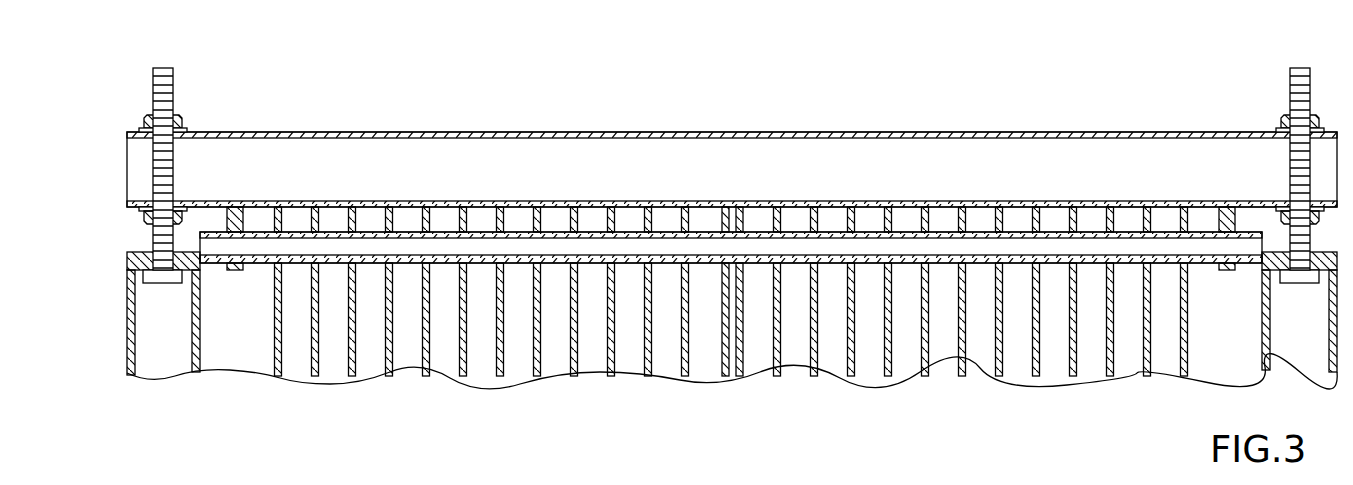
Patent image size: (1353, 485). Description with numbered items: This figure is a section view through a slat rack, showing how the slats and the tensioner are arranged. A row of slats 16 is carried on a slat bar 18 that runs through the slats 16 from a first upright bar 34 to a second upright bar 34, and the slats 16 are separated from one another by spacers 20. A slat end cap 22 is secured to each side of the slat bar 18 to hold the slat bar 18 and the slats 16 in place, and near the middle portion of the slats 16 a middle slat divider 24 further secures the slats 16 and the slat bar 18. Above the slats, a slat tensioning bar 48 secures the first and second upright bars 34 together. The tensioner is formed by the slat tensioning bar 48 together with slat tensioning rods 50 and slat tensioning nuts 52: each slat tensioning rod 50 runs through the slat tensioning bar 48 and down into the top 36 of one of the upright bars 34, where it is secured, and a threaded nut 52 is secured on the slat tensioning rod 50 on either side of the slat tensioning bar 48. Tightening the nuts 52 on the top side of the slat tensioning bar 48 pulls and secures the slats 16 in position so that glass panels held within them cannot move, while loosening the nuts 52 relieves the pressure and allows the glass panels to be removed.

The slat 16 is at (384, 222).
The slat bar 18 is at (552, 229).
The spacer 20 is at (440, 229).
The slat end cap 22 is at (240, 222).
The middle slat divider 24 is at (728, 222).
The upright bar 34 is at (200, 360).
The top of upright bar 36 is at (188, 273).
The slat tensioning bar 48 is at (442, 133).
The slat tensioning rod 50 is at (165, 156).
The slat tensioning nut 52 is at (178, 121).